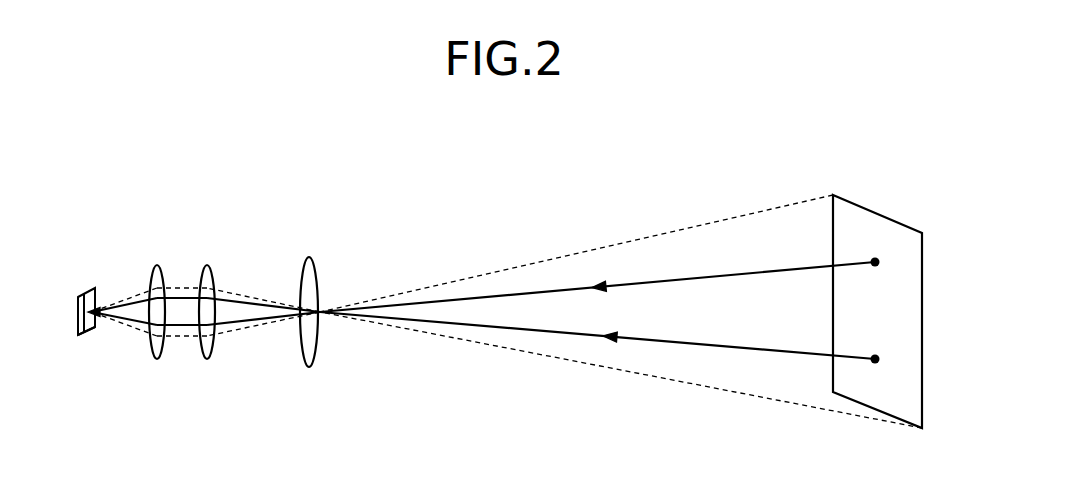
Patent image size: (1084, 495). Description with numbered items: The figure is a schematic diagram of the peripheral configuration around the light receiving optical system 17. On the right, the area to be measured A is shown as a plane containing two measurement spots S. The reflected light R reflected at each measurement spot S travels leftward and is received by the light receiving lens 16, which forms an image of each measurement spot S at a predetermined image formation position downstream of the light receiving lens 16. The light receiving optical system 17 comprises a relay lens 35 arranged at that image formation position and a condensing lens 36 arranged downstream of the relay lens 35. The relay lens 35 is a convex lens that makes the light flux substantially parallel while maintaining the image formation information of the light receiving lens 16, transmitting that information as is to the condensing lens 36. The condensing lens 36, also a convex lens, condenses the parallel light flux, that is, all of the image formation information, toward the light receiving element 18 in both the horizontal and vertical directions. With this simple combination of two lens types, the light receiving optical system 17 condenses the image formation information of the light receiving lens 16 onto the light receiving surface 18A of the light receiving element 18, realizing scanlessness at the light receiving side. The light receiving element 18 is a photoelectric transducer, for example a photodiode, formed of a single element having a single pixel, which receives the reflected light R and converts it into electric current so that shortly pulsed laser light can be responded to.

The light receiving lens 16 is at (309, 257).
The light receiving optical system 17 is at (232, 212).
The light receiving element 18 is at (80, 336).
The light receiving surface 18A is at (91, 330).
The relay lens 35 is at (208, 264).
The condensing lens 36 is at (157, 264).
The area to be measured A is at (888, 214).
The reflected light R is at (658, 278).
The measurement spot S is at (879, 262).